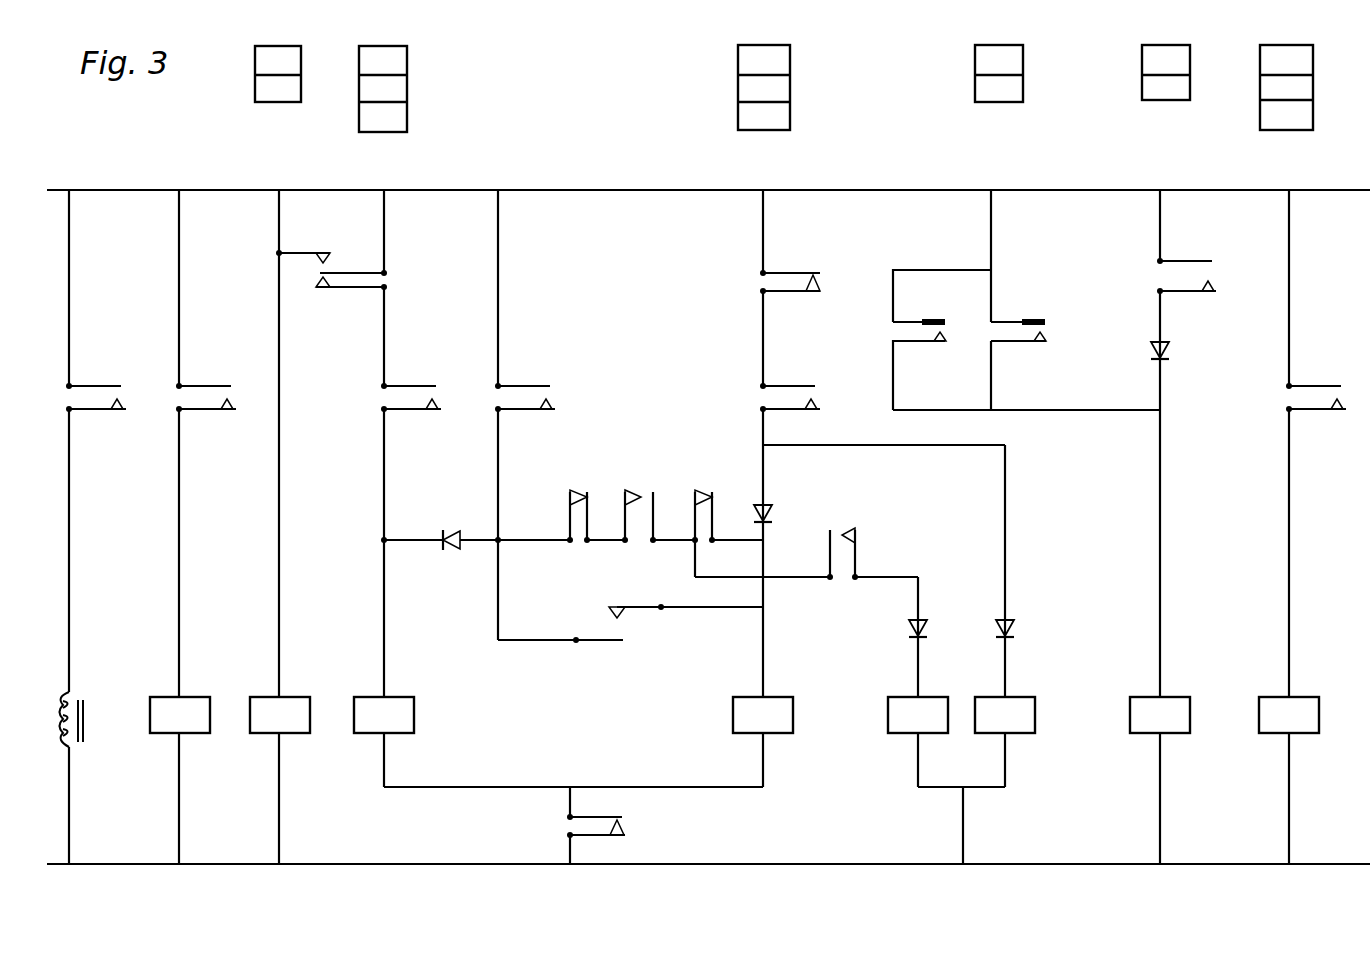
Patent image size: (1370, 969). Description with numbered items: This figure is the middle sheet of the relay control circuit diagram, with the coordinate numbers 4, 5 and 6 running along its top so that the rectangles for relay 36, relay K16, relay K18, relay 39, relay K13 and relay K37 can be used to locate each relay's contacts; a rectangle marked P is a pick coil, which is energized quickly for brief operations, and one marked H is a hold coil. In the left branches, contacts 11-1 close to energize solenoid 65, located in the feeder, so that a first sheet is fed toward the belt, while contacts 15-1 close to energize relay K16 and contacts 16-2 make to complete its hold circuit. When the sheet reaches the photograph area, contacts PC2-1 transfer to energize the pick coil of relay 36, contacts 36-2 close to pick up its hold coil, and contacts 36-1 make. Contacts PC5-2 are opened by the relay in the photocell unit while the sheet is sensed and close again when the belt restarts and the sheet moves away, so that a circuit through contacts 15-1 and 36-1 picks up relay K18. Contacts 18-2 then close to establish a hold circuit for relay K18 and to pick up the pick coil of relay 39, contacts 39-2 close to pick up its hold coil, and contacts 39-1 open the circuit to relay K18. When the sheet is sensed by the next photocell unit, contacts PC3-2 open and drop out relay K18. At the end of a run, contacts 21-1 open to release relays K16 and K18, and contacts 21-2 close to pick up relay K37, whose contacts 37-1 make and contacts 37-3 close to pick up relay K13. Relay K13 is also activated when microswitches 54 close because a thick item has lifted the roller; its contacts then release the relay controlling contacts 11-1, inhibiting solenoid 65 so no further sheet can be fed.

The relay 36 is at (230, 403).
The relay K16 is at (367, 389).
The relay K18 is at (747, 389).
The relay 39 is at (961, 403).
The relay K13 is at (1145, 389).
The relay K37 is at (1268, 389).
The coordinate number 4 is at (302, 148).
The coordinate number 5 is at (679, 148).
The coordinate number 6 is at (1063, 148).
The contacts 11-1 is at (92, 412).
The contacts 36-2 is at (202, 412).
The contacts 16-2 is at (407, 415).
The contacts 15-1 is at (518, 385).
The contacts 18-2 is at (785, 385).
The contacts 21-2 is at (1311, 412).
The contacts PC3-2 is at (786, 272).
The contacts 37-3 is at (1172, 295).
The contacts PC2-1 is at (368, 290).
The microswitches 54 is at (953, 293).
The contacts PC5-2 is at (582, 545).
The contacts 36-1 is at (643, 491).
The contacts 39-1 is at (700, 490).
The contacts 39-2 is at (838, 528).
The contacts 37-1 is at (620, 628).
The contacts 21-1 is at (592, 816).
The solenoid 65 is at (88, 708).